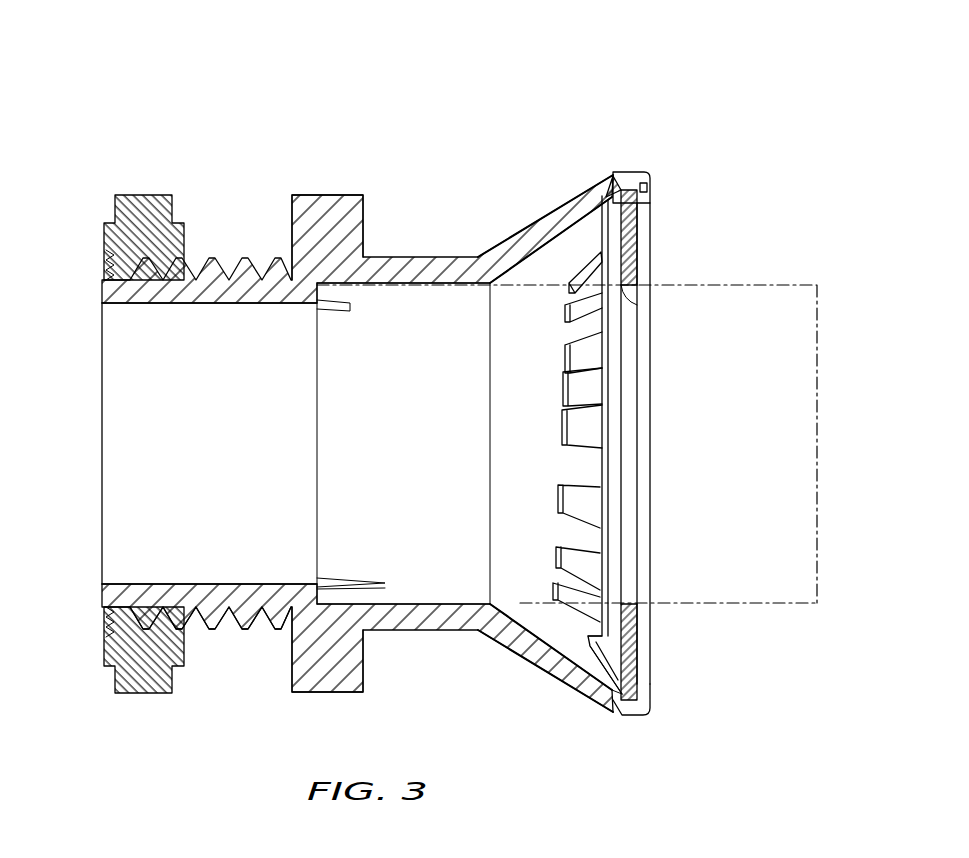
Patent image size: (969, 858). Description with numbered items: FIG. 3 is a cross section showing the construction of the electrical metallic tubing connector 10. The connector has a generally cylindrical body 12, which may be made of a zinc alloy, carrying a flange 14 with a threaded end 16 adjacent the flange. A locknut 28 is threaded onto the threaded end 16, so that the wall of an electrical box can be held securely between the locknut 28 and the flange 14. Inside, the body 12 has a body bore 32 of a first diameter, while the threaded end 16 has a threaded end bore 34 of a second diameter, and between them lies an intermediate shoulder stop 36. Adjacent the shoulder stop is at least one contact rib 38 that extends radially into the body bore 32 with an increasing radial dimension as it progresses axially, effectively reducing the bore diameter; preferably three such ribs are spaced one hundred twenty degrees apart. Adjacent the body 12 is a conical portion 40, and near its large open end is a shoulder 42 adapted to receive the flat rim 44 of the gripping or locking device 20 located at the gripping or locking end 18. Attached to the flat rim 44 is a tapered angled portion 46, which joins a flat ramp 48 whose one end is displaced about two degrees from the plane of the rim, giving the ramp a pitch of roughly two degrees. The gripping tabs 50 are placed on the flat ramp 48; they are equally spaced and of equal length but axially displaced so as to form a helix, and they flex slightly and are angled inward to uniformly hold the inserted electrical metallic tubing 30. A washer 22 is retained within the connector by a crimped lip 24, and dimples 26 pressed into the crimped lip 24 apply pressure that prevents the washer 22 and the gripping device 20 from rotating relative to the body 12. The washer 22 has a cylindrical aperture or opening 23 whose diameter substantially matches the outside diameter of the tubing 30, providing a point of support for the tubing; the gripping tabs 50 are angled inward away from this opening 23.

The electrical metallic tubing connector 10 is at (497, 113).
The body 12 is at (431, 254).
The flange 14 is at (329, 196).
The threaded end 16 is at (228, 631).
The gripping or locking end 18 is at (509, 673).
The gripping or locking device 20 is at (591, 252).
The washer 22 is at (629, 249).
The cylindrical aperture or opening 23 is at (631, 291).
The crimped lip 24 is at (651, 668).
The dimples 26 is at (651, 188).
The locknut 28 is at (150, 194).
The electrical metallic tubing 30 is at (776, 284).
The body bore 32 is at (449, 286).
The threaded end bore 34 is at (186, 303).
The intermediate shoulder stop 36 is at (312, 297).
The contact rib 38 is at (346, 580).
The conical portion 40 is at (531, 224).
The shoulder 42 is at (619, 180).
The flat rim 44 is at (606, 705).
The tapered angled portion 46 is at (603, 662).
The flat ramp 48 is at (590, 636).
The gripping tabs 50 is at (563, 492).